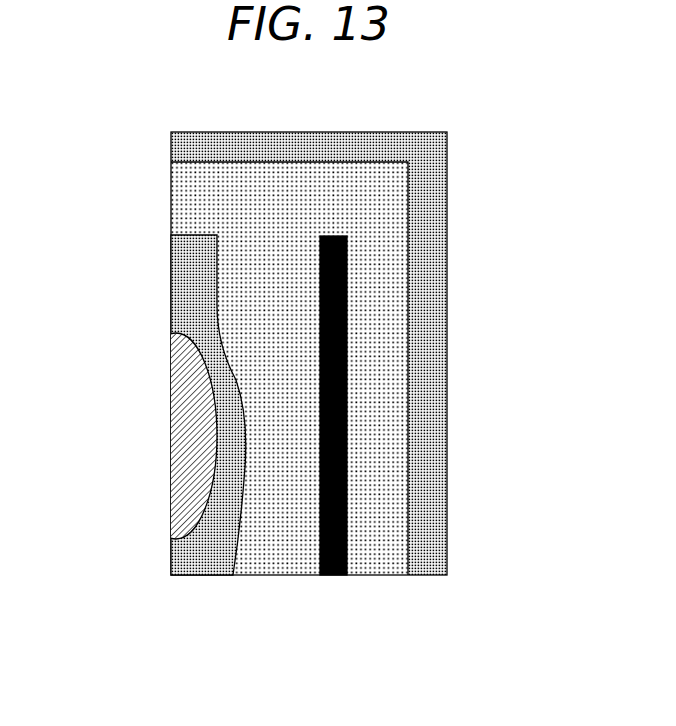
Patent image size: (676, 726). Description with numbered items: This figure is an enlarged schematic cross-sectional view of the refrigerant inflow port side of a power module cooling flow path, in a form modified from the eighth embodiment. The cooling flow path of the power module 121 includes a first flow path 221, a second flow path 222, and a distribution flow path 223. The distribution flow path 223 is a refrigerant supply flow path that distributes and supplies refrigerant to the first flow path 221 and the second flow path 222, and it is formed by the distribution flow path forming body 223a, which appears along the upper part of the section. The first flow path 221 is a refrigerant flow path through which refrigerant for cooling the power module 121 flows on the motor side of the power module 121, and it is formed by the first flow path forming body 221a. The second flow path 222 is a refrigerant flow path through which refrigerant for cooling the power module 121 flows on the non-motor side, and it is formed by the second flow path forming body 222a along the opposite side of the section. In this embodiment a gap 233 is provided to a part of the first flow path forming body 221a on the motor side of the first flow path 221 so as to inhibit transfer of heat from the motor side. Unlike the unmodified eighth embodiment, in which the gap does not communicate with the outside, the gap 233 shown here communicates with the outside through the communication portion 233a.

The power module 121 is at (333, 575).
The first flow path 221 is at (176, 444).
The first flow path forming body 221a is at (183, 295).
The second flow path 222 is at (386, 562).
The second flow path forming body 222a is at (437, 385).
The distribution flow path 223 is at (370, 193).
The distribution flow path forming body 223a is at (230, 145).
The gap 233 is at (140, 490).
The communication portion 233a is at (172, 445).